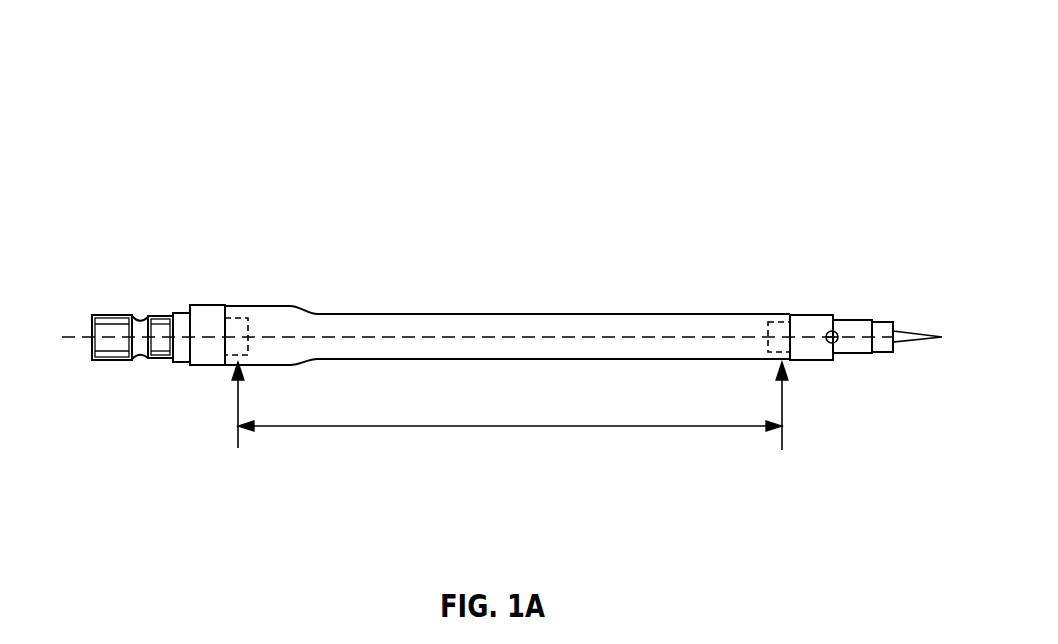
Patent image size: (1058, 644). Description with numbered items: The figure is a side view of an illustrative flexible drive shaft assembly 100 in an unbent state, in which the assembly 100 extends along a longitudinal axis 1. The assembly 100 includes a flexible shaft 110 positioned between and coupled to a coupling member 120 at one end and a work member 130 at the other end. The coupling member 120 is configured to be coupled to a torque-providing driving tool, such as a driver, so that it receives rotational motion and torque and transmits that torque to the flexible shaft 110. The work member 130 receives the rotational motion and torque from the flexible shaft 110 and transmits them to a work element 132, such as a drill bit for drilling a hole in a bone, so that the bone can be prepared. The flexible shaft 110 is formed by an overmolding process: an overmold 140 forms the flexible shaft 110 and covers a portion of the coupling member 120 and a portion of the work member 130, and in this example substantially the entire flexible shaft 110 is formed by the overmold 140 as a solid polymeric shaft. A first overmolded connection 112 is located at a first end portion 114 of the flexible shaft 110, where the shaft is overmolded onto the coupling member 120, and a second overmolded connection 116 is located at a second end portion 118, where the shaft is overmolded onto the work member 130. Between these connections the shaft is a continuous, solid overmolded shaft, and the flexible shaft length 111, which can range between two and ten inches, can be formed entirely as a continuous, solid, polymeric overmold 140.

The flexible drive shaft assembly 100 is at (190, 93).
The longitudinal axis 1 is at (63, 337).
The coupling member 120 is at (233, 306).
The first overmolded connection 112 is at (238, 318).
The flexible shaft 110 is at (362, 328).
The overmold 140 is at (568, 313).
The second overmolded connection 116 is at (782, 315).
The work member 130 is at (778, 340).
The work element 132 is at (900, 341).
The first end portion 114 is at (251, 420).
The second end portion 118 is at (769, 422).
The flexible shaft length 111 is at (453, 426).